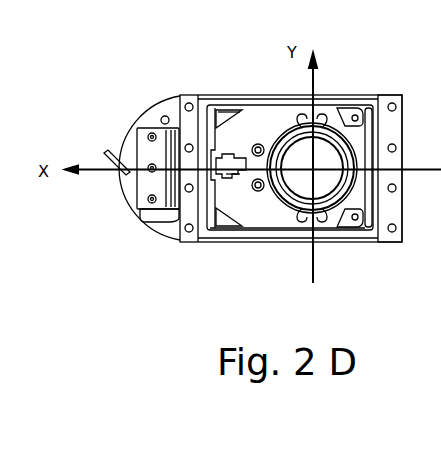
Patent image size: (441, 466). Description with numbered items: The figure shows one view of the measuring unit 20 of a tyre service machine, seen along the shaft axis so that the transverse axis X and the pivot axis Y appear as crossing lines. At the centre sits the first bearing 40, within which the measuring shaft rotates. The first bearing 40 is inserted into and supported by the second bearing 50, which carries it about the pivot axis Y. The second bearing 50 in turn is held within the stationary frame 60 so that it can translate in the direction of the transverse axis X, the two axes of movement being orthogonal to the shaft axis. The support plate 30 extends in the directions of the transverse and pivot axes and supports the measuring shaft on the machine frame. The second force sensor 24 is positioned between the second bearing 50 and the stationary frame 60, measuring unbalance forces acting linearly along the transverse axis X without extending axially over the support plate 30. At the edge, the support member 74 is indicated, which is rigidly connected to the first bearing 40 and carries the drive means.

The measuring unit 20 is at (353, 64).
The second force sensor 24 is at (233, 160).
The support plate 30 is at (280, 254).
The first bearing 40 is at (297, 141).
The second bearing 50 is at (255, 211).
The stationary frame 60 is at (383, 240).
The support member 74 is at (78, 0).